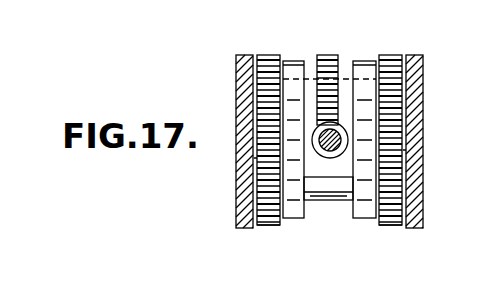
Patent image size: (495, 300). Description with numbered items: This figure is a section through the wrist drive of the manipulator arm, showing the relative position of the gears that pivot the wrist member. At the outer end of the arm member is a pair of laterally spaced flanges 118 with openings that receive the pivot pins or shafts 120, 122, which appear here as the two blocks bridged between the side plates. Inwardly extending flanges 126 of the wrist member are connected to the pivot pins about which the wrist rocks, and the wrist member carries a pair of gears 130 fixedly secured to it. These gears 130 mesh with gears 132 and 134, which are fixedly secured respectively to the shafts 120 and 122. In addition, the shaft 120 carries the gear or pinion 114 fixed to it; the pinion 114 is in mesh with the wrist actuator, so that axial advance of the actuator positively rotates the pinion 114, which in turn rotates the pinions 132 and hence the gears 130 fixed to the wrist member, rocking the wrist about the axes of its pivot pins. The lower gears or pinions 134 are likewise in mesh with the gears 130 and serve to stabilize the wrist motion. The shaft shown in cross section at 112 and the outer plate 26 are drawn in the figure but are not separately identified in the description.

The side plate 26 is at (424, 93).
The shaft 112 is at (320, 152).
The pinion 114 is at (333, 54).
The laterally spaced flanges 118 is at (302, 220).
The pivot pin 120 is at (309, 78).
The pivot pin 122 is at (336, 200).
The inwardly extending flanges 126 is at (237, 62).
The gears 130 is at (253, 164).
The gears 132 is at (270, 54).
The lower gears 134 is at (273, 226).